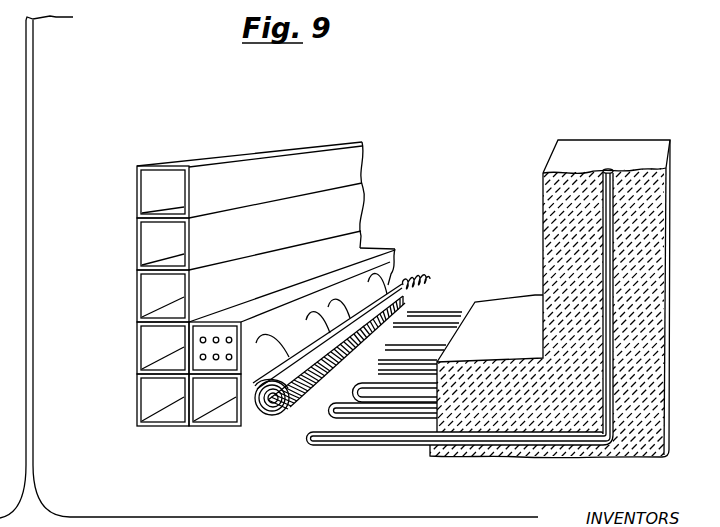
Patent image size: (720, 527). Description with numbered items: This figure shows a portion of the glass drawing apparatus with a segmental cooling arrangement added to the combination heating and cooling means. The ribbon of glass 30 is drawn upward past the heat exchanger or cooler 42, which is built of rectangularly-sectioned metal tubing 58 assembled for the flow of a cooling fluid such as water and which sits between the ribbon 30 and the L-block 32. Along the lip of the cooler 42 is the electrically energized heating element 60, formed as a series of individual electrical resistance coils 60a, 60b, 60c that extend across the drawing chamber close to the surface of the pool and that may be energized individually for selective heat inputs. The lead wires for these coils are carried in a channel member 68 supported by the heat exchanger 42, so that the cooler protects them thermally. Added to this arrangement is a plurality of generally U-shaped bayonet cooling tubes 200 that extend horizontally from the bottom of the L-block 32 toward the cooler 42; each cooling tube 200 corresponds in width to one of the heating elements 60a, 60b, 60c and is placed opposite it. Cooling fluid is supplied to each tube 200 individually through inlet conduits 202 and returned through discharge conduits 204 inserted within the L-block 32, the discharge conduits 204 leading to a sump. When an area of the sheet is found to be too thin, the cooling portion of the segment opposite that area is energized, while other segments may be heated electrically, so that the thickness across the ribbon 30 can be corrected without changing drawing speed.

The ribbon of glass 30 is at (34, 272).
The L-block 32 is at (643, 458).
The heat exchanger 42 is at (226, 284).
The rectangularly-sectioned metal tubing 58 is at (137, 316).
The heating element 60 is at (330, 356).
The heating coil 60a is at (283, 414).
The heating coil 60b is at (364, 334).
The heating coil 60c is at (440, 260).
The channel member 68 is at (216, 322).
The U-shaped bayonet cooling tube 200 is at (448, 306).
The inlet conduit 202 is at (600, 284).
The discharge conduit 204 is at (480, 307).